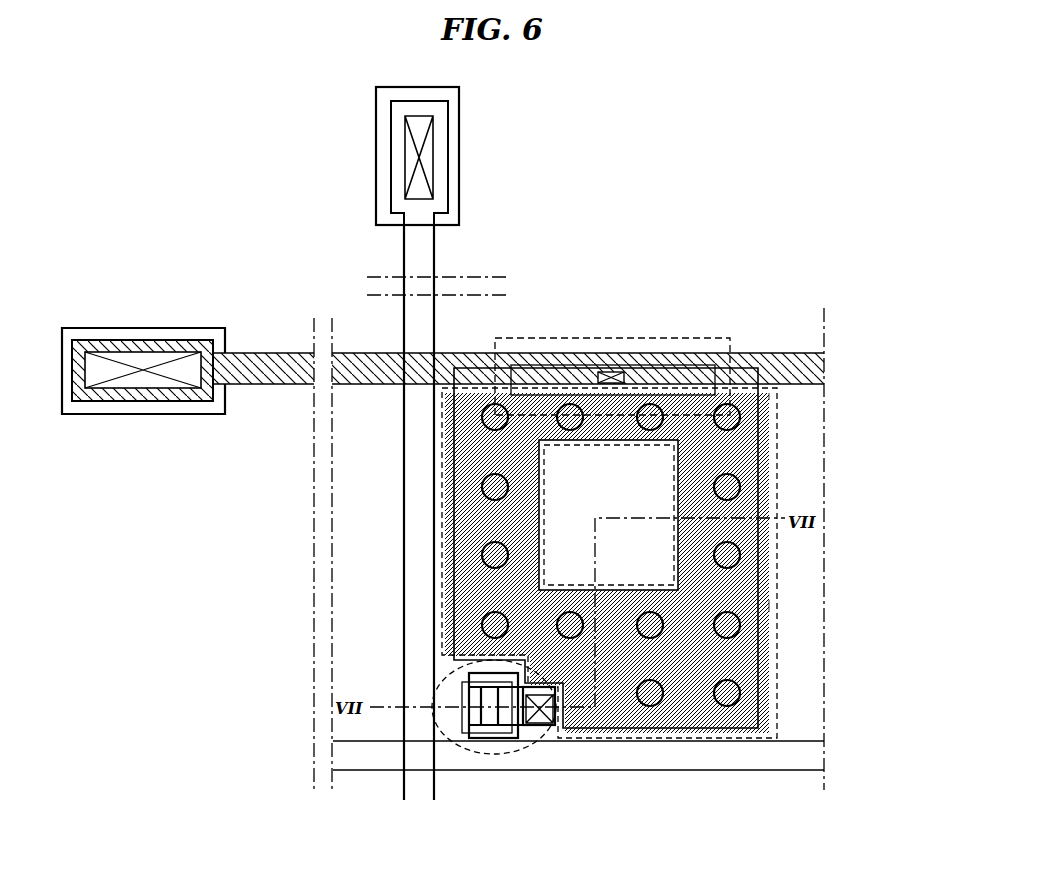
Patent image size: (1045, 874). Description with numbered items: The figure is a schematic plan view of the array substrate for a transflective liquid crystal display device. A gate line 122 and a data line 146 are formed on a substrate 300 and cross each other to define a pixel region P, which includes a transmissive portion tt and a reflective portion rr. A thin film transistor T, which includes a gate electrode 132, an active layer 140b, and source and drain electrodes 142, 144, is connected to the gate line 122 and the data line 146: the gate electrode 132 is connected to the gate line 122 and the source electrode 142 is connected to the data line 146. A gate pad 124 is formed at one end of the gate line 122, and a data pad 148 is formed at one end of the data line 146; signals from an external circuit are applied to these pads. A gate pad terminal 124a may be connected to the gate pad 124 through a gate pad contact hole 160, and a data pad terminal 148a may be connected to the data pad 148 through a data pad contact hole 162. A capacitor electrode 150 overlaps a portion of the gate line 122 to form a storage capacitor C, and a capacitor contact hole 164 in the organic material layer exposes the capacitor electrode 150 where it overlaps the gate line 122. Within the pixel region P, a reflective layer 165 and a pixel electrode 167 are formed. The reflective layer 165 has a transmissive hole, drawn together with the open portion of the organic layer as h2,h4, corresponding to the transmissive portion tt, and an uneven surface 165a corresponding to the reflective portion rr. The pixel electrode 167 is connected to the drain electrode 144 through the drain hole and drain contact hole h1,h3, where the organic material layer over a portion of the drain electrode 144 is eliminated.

The data pad 148 is at (440, 116).
The data pad terminal 148a is at (457, 218).
The data pad contact hole 162 is at (433, 166).
The data line 146 is at (404, 552).
The gate pad 124 is at (167, 342).
The gate pad terminal 124a is at (172, 410).
The gate pad contact hole 160 is at (117, 387).
The reflective layer 165 is at (769, 582).
The open portion and transmissive hole h2,h4 is at (658, 493).
The uneven surface 165a is at (727, 708).
The pixel electrode 167 is at (760, 647).
The pixel region P is at (778, 690).
The transmissive portion tt is at (757, 445).
The reflective portion rr is at (775, 609).
The capacitor electrode 150 is at (696, 365).
The capacitor contact hole 164 is at (613, 372).
The storage capacitor C is at (650, 338).
The gate electrode 132 is at (455, 668).
The source electrode 142 is at (455, 717).
The semiconductor layer 140b is at (487, 733).
The drain electrode 144 is at (553, 733).
The drain hole and drain contact hole h1,h3 is at (537, 723).
The thin film transistor T is at (507, 758).
The gate line 122 is at (650, 753).
The substrate 300 is at (860, 403).